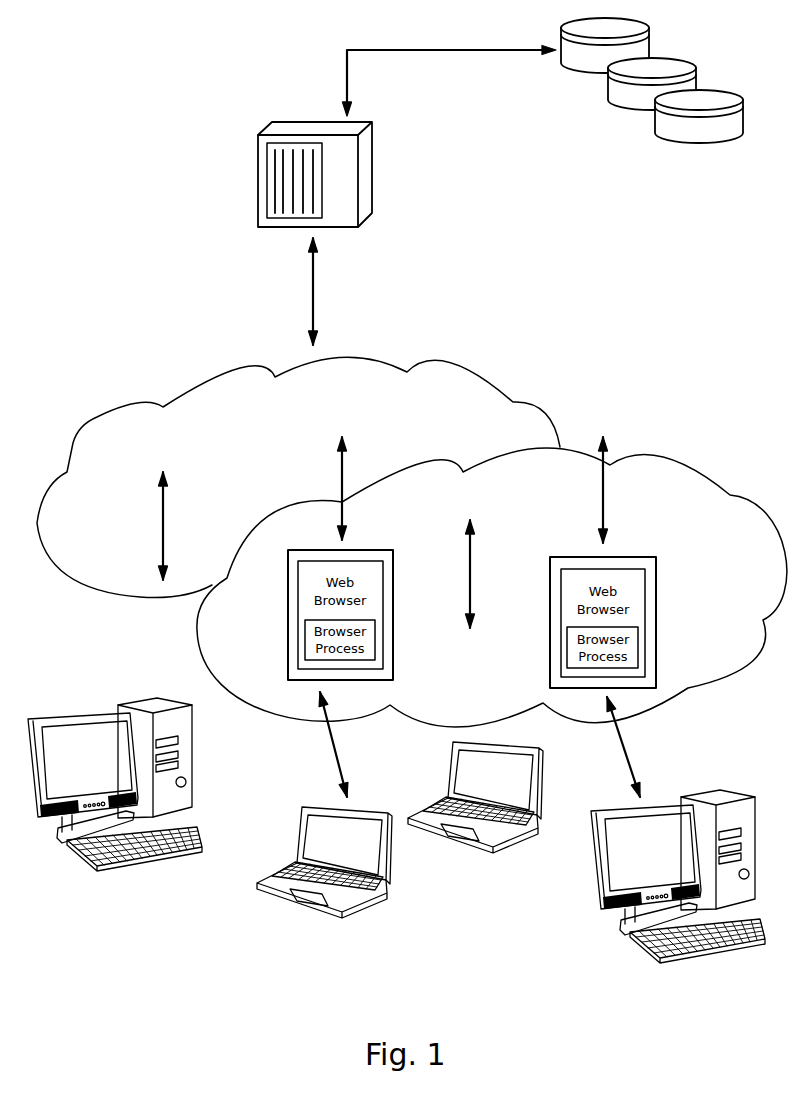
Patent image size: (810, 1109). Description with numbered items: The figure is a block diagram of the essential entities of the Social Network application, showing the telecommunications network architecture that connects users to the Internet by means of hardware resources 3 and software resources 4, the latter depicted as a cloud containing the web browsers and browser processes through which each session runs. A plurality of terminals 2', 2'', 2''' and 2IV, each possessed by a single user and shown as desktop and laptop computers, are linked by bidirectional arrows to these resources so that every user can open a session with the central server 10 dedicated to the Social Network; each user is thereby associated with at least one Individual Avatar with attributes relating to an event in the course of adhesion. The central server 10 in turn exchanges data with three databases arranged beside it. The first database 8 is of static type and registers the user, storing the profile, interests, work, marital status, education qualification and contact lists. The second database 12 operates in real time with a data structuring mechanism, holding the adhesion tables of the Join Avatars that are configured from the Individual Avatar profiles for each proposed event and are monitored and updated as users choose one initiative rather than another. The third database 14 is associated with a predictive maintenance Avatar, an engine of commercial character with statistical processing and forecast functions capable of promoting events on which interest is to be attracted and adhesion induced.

The terminal 2' is at (115, 802).
The terminal 2'' is at (324, 878).
The terminal 2''' is at (475, 815).
The terminal 2IV is at (678, 894).
The hardware resources 3 is at (298, 477).
The software resources 4 is at (492, 587).
The first database 8 is at (692, 150).
The central server 10 is at (372, 172).
The second database 12 is at (638, 115).
The third database 14 is at (590, 80).